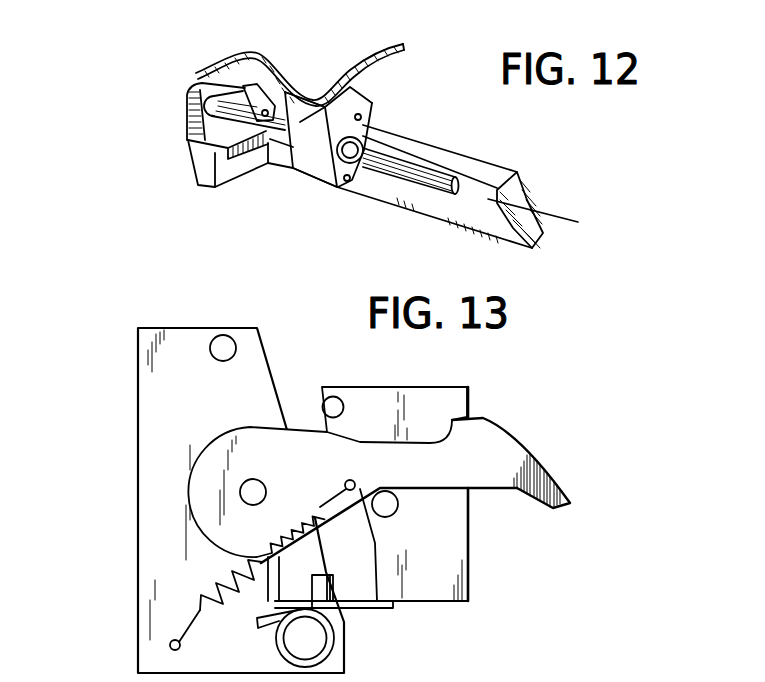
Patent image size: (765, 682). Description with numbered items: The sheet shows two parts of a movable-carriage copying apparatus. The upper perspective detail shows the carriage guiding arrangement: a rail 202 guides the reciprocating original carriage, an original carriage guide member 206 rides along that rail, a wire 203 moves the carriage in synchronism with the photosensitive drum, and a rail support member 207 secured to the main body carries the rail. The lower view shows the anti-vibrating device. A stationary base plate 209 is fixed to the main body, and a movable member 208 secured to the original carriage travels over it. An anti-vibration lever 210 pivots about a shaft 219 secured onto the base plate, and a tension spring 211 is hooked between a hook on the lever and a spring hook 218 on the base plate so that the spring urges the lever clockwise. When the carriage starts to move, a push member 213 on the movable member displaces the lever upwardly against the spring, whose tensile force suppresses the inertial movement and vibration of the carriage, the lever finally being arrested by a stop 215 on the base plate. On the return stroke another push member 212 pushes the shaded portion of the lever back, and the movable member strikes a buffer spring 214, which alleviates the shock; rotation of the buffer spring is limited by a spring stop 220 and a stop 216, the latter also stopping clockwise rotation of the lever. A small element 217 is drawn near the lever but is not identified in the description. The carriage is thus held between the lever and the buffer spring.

In FIG. 12, the rail 202 is at (398, 153).
In FIG. 12, the wire 203 is at (542, 207).
In FIG. 12, the original carriage guide member 206 is at (358, 92).
In FIG. 12, the rail support member 207 is at (247, 163).
In FIG. 13, the movable member 208 is at (470, 542).
In FIG. 13, the stationary base plate 209 is at (142, 548).
In FIG. 13, the anti-vibration lever 210 is at (538, 470).
In FIG. 13, the tension spring 211 is at (232, 580).
In FIG. 13, the push member 212 is at (333, 397).
In FIG. 13, the push member 213 is at (398, 504).
In FIG. 13, the buffer spring 214 is at (332, 640).
In FIG. 13, the stop 215 is at (236, 348).
In FIG. 13, the stop 216 is at (266, 598).
In FIG. 13, the pin 217 is at (350, 480).
In FIG. 13, the spring hook 218 is at (170, 645).
In FIG. 13, the shaft 219 is at (262, 490).
In FIG. 13, the spring stop 220 is at (322, 520).